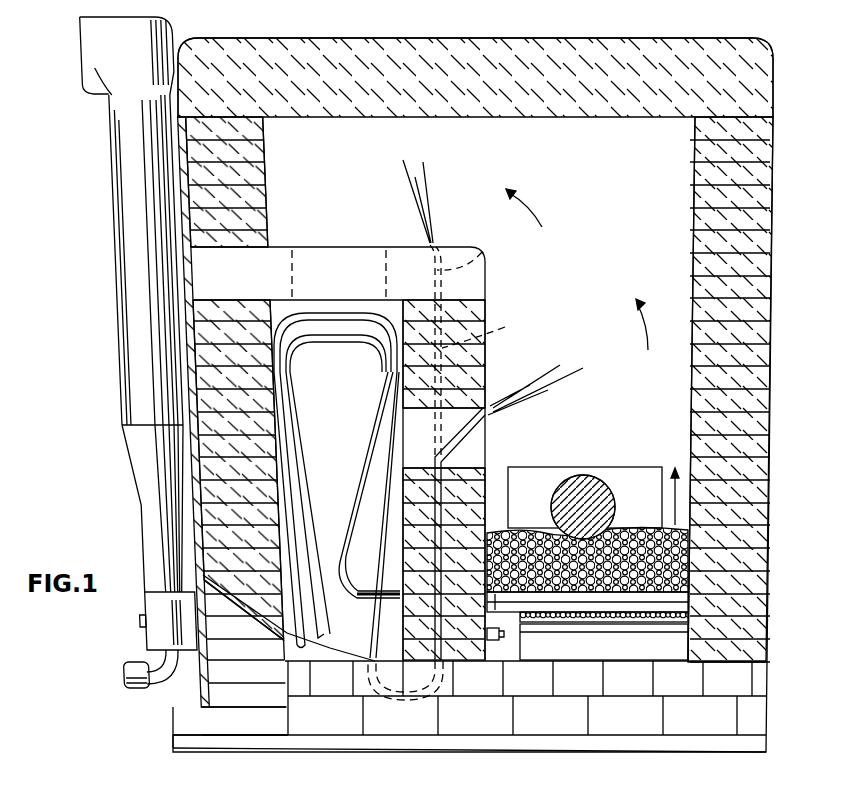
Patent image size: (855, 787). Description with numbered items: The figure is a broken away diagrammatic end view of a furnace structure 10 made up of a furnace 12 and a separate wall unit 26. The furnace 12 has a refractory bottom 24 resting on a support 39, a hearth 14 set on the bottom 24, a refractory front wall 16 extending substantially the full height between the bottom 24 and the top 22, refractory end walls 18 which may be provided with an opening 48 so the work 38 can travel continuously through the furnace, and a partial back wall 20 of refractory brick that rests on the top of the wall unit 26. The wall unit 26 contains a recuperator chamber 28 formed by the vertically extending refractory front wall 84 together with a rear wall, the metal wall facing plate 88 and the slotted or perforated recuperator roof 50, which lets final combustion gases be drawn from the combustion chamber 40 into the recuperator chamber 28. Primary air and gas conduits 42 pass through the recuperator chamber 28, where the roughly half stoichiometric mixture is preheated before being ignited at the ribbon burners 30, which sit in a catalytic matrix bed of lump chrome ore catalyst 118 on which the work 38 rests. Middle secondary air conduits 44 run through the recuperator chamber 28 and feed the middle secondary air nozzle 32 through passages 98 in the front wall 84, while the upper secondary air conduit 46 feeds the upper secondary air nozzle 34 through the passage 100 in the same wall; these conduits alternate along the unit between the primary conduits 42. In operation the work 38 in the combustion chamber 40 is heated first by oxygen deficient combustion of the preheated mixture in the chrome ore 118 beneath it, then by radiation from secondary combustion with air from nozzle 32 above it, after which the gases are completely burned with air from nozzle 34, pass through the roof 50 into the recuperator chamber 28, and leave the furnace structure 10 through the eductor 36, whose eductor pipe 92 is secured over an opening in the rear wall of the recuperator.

The furnace structure 10 is at (779, 545).
The furnace 12 is at (778, 218).
The hearth 14 is at (555, 628).
The front wall 16 is at (772, 300).
The end walls 18 is at (366, 690).
The partial back wall 20 is at (259, 150).
The top 22 is at (574, 38).
The bottom 24 is at (592, 740).
The separate wall unit 26 is at (345, 203).
The recuperator chamber 28 is at (356, 370).
The primary air and gas mixture ribbon burners 30 is at (618, 624).
The middle secondary air nozzle 32 is at (470, 445).
The upper secondary air nozzle 34 is at (489, 249).
The eductor 36 is at (100, 352).
The work 38 is at (605, 478).
The support 39 is at (705, 752).
The combustion chamber 40 is at (588, 294).
The primary air and gas conduits 42 is at (381, 425).
The middle secondary air conduits 44 is at (298, 478).
The upper secondary air conduit 46 is at (316, 505).
The opening 48 is at (545, 467).
The recuperator roof 50 is at (358, 247).
The front wall of the wall unit 84 is at (485, 365).
The metal wall facing plate 88 is at (175, 688).
The eductor pipe 92 is at (100, 277).
The passages 98 is at (112, 690).
The passage 100 is at (477, 388).
The chrome ore catalyst 118 is at (650, 530).